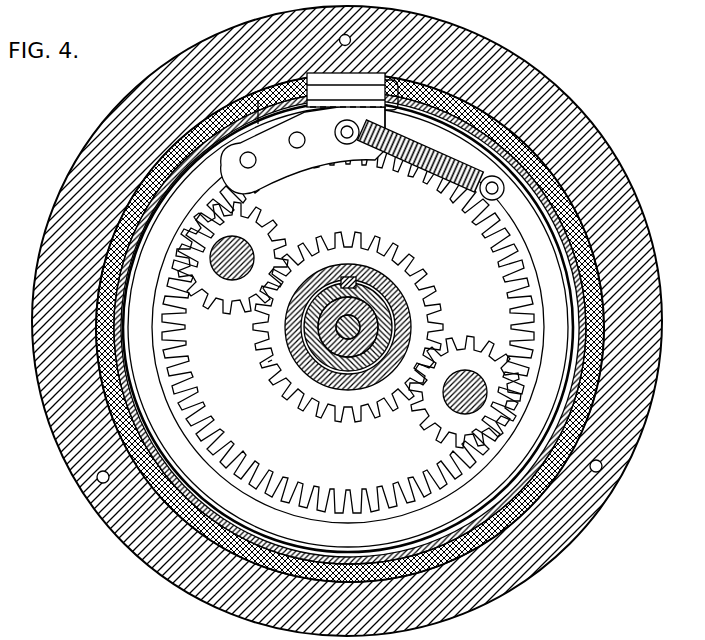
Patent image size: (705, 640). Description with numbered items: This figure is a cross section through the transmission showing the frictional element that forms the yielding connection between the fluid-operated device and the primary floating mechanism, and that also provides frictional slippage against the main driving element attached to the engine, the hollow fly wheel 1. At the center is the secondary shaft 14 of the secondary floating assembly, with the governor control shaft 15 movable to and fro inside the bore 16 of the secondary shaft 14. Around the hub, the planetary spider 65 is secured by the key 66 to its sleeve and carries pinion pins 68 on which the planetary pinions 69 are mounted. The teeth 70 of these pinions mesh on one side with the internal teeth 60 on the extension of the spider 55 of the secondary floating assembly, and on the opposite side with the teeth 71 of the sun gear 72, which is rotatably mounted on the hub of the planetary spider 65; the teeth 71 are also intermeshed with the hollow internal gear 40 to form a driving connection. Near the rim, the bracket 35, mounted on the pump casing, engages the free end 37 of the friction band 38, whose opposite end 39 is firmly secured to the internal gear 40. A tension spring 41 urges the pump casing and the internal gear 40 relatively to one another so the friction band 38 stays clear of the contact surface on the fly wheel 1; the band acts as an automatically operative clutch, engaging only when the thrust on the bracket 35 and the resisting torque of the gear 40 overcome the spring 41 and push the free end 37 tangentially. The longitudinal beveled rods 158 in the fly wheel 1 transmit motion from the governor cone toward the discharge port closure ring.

The hollow fly wheel 1 is at (63, 192).
The secondary shaft 14 is at (428, 285).
The governor control shaft 15 is at (364, 292).
The bore 16 is at (376, 303).
The bracket 35 is at (368, 93).
The free end 37 is at (311, 108).
The friction band 38 is at (114, 232).
The opposite end 39 is at (470, 128).
The internal gear 40 is at (455, 132).
The tension spring 41 is at (426, 178).
The spider 55 is at (206, 446).
The internal teeth 60 is at (213, 398).
The planetary spider 65 is at (300, 323).
The key 66 is at (349, 277).
The pinion pins 68 is at (242, 248).
The planetary pinions 69 is at (257, 233).
The teeth 70 is at (262, 239).
The teeth 71 is at (268, 362).
The sun gear 72 is at (306, 342).
The longitudinal beveled rod 158 is at (339, 37).